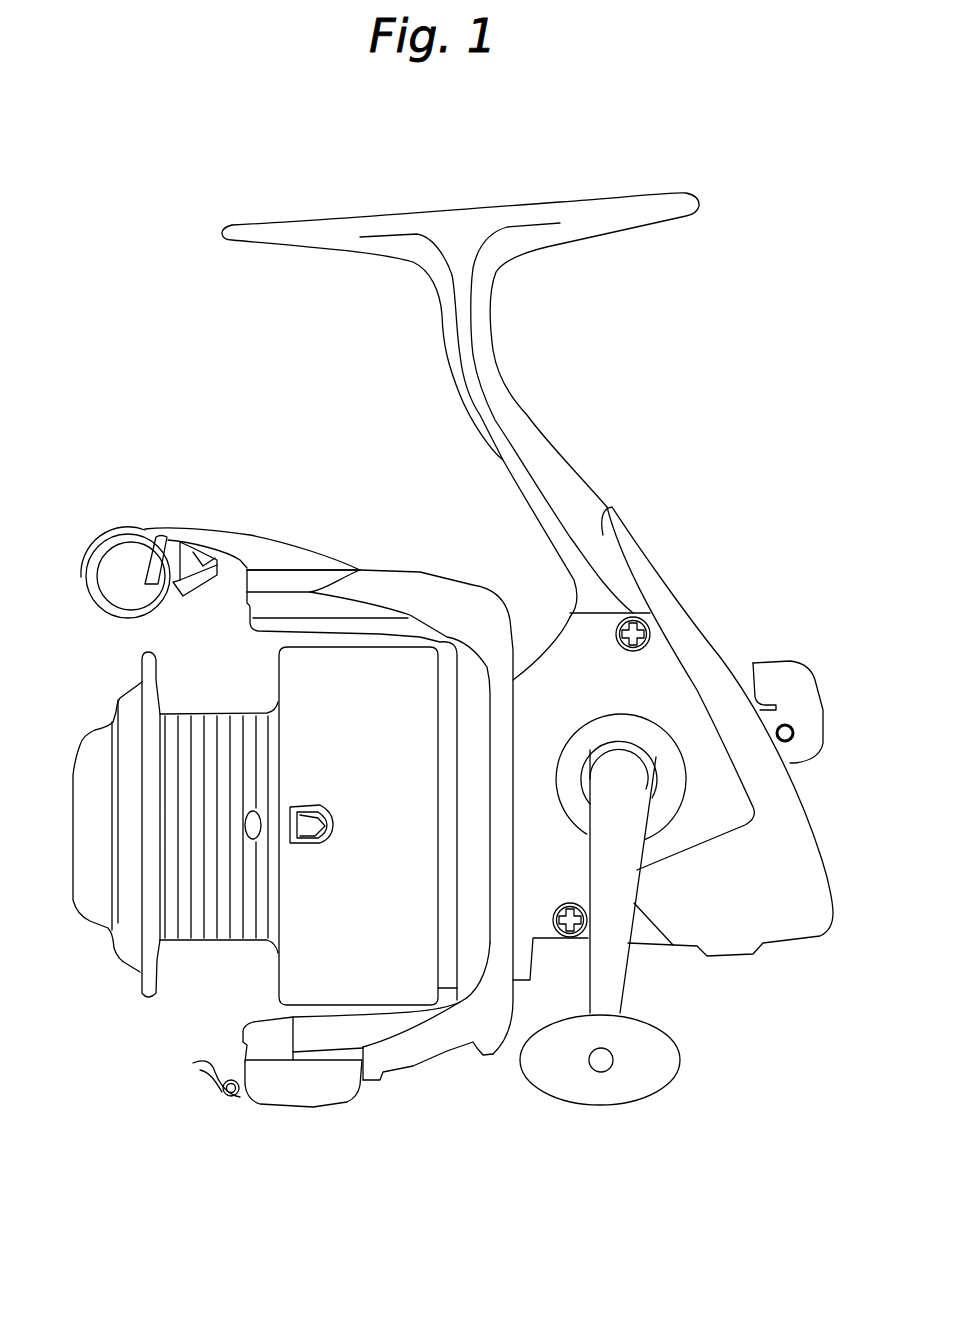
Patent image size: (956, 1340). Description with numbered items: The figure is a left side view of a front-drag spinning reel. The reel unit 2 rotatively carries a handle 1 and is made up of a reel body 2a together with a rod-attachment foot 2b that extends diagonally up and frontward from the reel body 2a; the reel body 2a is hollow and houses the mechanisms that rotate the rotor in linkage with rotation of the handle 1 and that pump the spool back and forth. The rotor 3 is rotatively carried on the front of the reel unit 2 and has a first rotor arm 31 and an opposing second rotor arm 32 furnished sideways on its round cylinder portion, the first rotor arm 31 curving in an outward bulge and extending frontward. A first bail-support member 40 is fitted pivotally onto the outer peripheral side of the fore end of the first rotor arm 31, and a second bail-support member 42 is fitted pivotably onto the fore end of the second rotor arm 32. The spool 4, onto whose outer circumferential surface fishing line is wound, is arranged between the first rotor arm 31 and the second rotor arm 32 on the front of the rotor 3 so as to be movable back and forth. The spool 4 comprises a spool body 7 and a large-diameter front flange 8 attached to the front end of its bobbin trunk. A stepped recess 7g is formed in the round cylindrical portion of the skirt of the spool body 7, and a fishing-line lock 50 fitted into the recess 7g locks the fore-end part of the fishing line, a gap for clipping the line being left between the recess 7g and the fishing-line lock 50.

The handle 1 is at (625, 982).
The reel unit 2 is at (588, 466).
The reel body 2a is at (663, 682).
The rod-attachment foot 2b is at (510, 413).
The rotor 3 is at (449, 1038).
The spool 4 is at (188, 953).
The spool body 7 is at (205, 955).
The stepped recess 7g is at (324, 808).
The front flange 8 is at (145, 997).
The first rotor arm 31 is at (381, 583).
The second rotor arm 32 is at (398, 1053).
The first bail-support member 40 is at (277, 550).
The second bail-support member 42 is at (287, 1092).
The fishing-line lock 50 is at (305, 845).